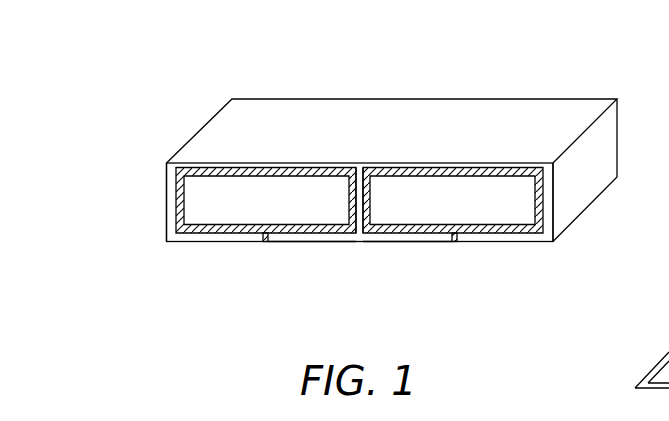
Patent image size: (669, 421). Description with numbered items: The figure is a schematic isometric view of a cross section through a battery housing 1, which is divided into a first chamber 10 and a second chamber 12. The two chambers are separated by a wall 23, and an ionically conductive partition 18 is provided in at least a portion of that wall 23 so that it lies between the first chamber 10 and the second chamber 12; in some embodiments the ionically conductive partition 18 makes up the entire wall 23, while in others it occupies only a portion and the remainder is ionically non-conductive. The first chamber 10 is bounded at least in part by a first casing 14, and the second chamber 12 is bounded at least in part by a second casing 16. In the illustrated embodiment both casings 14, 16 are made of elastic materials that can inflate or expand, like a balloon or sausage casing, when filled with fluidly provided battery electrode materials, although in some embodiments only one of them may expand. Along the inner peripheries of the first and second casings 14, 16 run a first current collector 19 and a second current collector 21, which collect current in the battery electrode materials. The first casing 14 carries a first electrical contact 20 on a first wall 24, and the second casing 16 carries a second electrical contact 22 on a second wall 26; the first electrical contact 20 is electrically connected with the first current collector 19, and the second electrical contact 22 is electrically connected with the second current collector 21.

The battery housing 1 is at (162, 109).
The first chamber 10 is at (304, 207).
The second chamber 12 is at (501, 209).
The first casing 14 is at (175, 242).
The second casing 16 is at (545, 242).
The ionically conductive partition 18 is at (361, 208).
The first current collector 19 is at (268, 168).
The first electrical contact 20 is at (266, 242).
The second current collector 21 is at (466, 173).
The second electrical contact 22 is at (454, 242).
The wall 23 is at (369, 183).
The first wall 24 is at (296, 250).
The second wall 26 is at (421, 250).